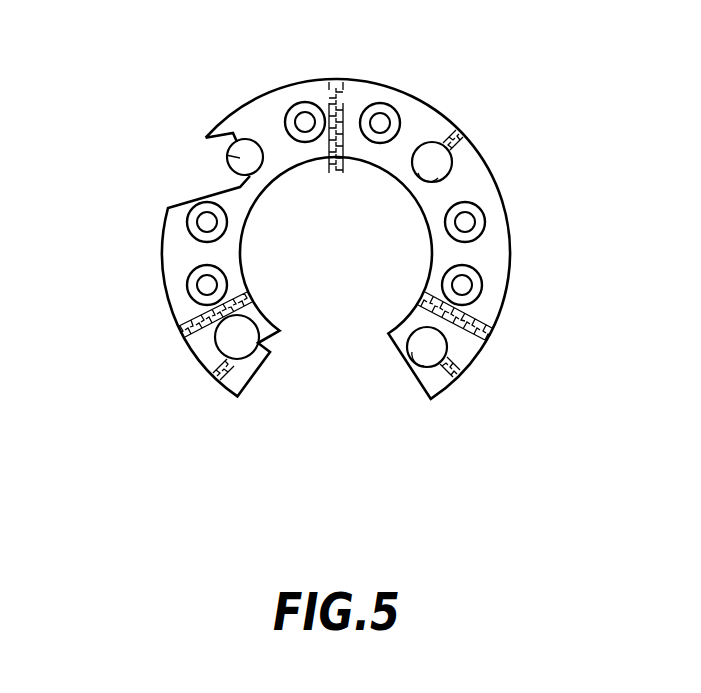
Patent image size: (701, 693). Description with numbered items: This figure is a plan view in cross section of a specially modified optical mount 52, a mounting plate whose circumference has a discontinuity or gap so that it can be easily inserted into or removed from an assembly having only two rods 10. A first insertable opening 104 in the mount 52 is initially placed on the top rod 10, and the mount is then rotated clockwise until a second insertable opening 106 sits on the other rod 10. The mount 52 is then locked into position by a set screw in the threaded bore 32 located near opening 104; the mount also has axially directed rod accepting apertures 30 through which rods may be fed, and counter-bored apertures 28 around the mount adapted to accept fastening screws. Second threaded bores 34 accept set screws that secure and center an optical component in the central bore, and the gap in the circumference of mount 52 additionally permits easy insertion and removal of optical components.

The plate retaining rod 10 is at (240, 345).
The counter-bored aperture 28 is at (384, 118).
The rod accepting aperture 30 is at (412, 362).
The first threaded bore 32 is at (216, 372).
The second threaded bore 34 is at (488, 334).
The optical mount 52 is at (500, 262).
The first insertable opening 104 is at (253, 343).
The second insertable opening 106 is at (235, 173).